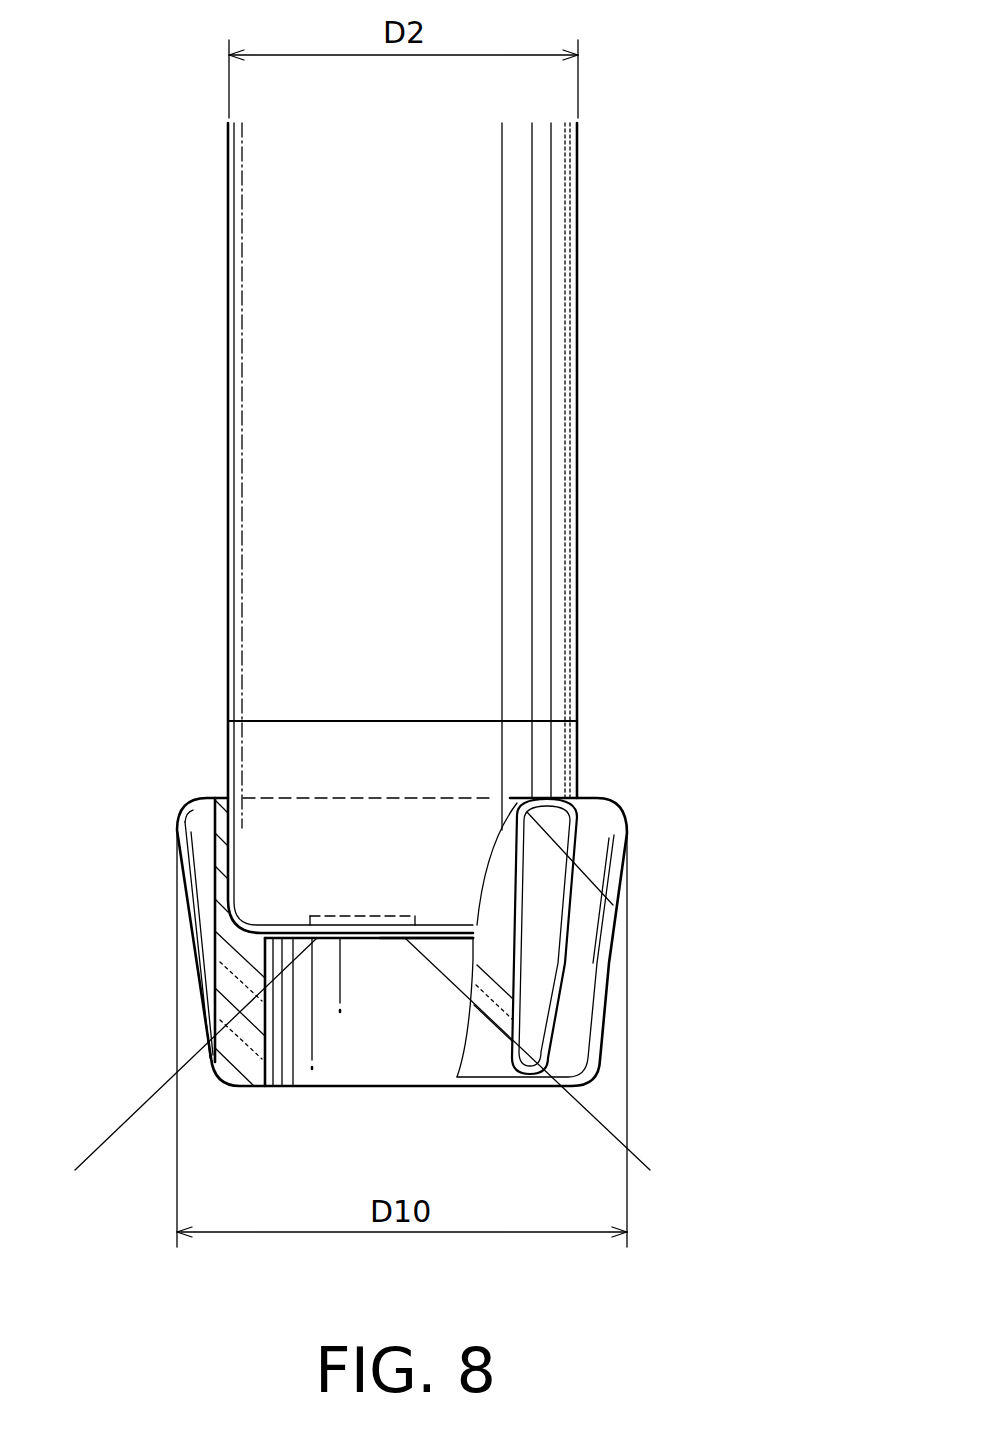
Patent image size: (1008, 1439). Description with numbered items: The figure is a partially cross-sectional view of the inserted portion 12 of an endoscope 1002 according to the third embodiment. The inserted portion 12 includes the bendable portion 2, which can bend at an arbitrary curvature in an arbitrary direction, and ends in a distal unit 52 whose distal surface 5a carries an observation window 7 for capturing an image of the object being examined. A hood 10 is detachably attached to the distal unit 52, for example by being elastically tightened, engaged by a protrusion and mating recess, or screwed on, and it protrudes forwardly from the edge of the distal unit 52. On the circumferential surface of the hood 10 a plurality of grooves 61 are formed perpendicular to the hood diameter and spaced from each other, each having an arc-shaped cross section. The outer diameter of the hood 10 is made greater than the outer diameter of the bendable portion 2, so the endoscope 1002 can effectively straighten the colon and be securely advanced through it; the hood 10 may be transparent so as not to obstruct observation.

The endoscope 1002 is at (680, 322).
The bendable portion 2 is at (256, 530).
The inserted portion 12 is at (604, 549).
The distal unit 52 is at (273, 897).
The grooves 61 is at (200, 917).
The observation window 7 is at (366, 938).
The distal surface 5a is at (455, 938).
The hood 10 is at (243, 1068).